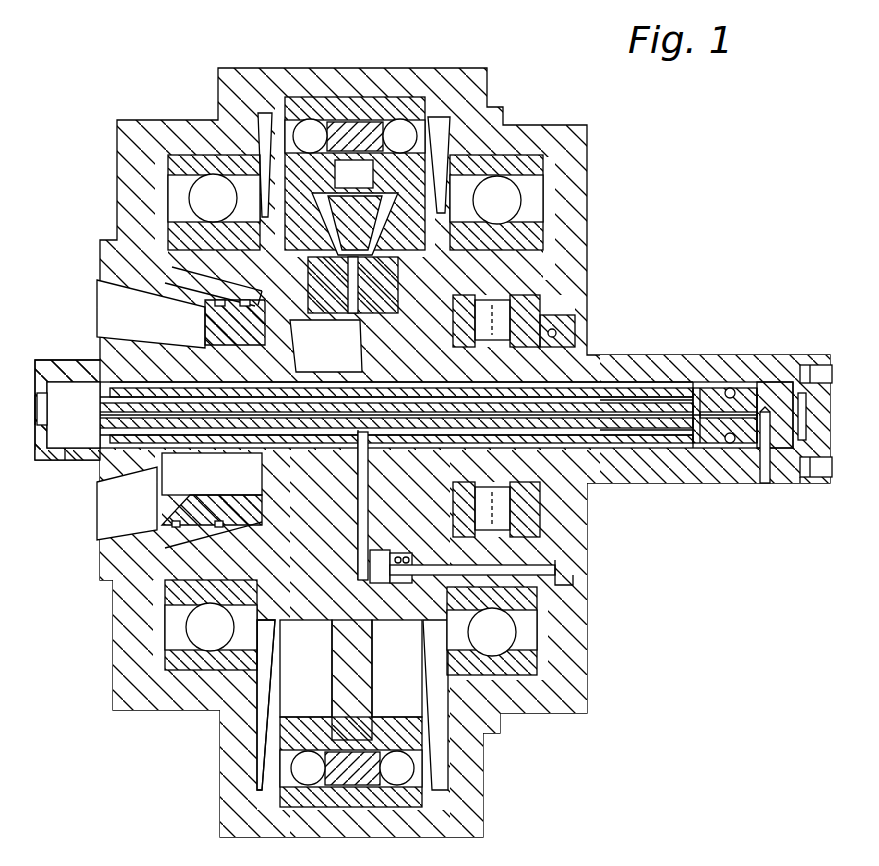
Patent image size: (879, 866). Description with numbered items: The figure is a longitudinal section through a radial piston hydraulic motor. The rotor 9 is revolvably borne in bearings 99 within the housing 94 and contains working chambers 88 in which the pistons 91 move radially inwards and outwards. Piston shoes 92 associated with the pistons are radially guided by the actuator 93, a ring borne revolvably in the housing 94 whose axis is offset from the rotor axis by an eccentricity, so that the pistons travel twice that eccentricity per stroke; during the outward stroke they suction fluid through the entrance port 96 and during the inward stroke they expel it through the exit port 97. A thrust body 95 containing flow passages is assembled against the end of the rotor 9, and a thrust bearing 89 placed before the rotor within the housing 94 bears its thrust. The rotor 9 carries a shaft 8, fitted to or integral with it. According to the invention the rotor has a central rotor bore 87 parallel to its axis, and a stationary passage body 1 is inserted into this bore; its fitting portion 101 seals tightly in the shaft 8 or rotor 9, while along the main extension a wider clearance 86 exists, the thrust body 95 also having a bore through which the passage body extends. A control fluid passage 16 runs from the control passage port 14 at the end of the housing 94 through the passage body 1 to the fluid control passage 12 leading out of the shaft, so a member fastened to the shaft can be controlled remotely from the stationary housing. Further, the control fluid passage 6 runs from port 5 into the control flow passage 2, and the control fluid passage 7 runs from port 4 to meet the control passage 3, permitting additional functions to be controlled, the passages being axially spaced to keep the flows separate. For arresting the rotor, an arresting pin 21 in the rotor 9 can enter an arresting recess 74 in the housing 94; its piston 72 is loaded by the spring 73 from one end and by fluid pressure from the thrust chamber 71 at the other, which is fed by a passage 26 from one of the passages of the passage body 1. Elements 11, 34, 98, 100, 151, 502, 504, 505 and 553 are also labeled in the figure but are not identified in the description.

The stationary passage body 1 is at (712, 390).
The control flow passage 2 is at (685, 388).
The control passage 3 is at (680, 448).
The passage port 4 is at (60, 462).
The passage port 5 is at (65, 365).
The control fluid passage 6 is at (75, 385).
The control fluid passage 7 is at (85, 450).
The shaft 8 is at (770, 360).
The rotor 9 is at (320, 610).
The end plate 11 is at (800, 440).
The fluid control passage 12 is at (765, 483).
The control passage port 14 is at (40, 393).
The control fluid passage 16 is at (702, 448).
The arresting pin 21 is at (575, 590).
The passage 26 is at (280, 600).
The bolt 34 is at (806, 483).
The thrust chamber 71 is at (380, 585).
The piston 72 is at (351, 730).
The spring 73 is at (402, 585).
The arresting recess 74 is at (560, 572).
The clearance 86 is at (85, 362).
The rotor bore 87 is at (425, 448).
The working chambers 88 is at (320, 332).
The thrust bearing 89 is at (520, 318).
The pistons 91 is at (385, 285).
The piston shoes 92 is at (405, 130).
The actuator 93 is at (365, 200).
The housing 94 is at (252, 85).
The thrust body 95 is at (235, 328).
The entrance port 96 is at (100, 290).
The exit port 97 is at (105, 500).
The bearing 98 is at (312, 130).
The bearings 99 is at (205, 185).
The nut 100 is at (733, 388).
The fitting portion 101 is at (665, 388).
The passage 151 is at (408, 382).
The screw 502 is at (815, 365).
The rod 504 is at (355, 445).
The chamber 505 is at (195, 449).
The tube 553 is at (368, 450).